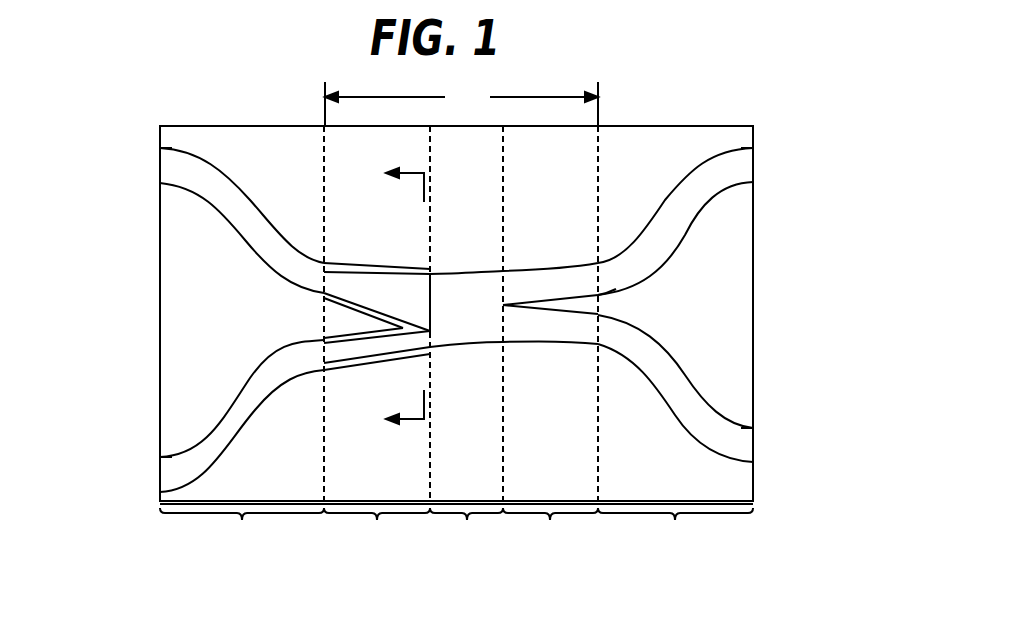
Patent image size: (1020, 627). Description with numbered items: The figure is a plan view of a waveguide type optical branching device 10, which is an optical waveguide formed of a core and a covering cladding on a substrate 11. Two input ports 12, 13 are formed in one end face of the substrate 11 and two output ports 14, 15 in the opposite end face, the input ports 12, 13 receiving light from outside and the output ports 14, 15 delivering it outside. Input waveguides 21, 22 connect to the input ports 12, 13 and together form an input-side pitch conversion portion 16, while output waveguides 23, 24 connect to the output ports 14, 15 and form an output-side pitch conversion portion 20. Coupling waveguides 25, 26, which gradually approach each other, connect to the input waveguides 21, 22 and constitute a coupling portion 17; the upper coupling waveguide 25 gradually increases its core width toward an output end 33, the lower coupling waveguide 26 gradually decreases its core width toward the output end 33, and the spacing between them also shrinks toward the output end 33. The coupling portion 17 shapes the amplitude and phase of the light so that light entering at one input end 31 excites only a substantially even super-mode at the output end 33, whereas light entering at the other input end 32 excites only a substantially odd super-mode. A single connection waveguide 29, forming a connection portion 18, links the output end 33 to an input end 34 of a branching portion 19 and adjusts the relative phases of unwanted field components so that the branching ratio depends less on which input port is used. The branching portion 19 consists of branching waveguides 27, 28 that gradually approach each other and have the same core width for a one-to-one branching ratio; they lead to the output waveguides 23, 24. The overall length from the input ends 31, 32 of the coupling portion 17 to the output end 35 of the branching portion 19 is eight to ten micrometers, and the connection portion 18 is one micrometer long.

The waveguide type optical branching device 10 is at (758, 88).
The substrate 11 is at (753, 292).
The input port 12 is at (160, 166).
The input port 13 is at (160, 479).
The output port 14 is at (753, 170).
The output port 15 is at (755, 440).
The input-side pitch conversion portion 16 is at (242, 533).
The coupling portion 17 is at (354, 558).
The connection portion 18 is at (470, 558).
The branching portion 19 is at (589, 558).
The output-side pitch conversion portion 20 is at (675, 533).
The input waveguide 21 is at (229, 203).
The input waveguide 22 is at (250, 385).
The output waveguide 23 is at (677, 198).
The output waveguide 24 is at (683, 397).
The coupling waveguide 25 is at (357, 282).
The coupling waveguide 26 is at (387, 347).
The branching waveguide 27 is at (522, 271).
The branching waveguide 28 is at (565, 332).
The connection waveguide 29 is at (450, 273).
The input end 31 is at (323, 281).
The input end 32 is at (323, 360).
The output end 33 is at (430, 300).
The input end 34 is at (502, 306).
The output end 35 is at (598, 295).